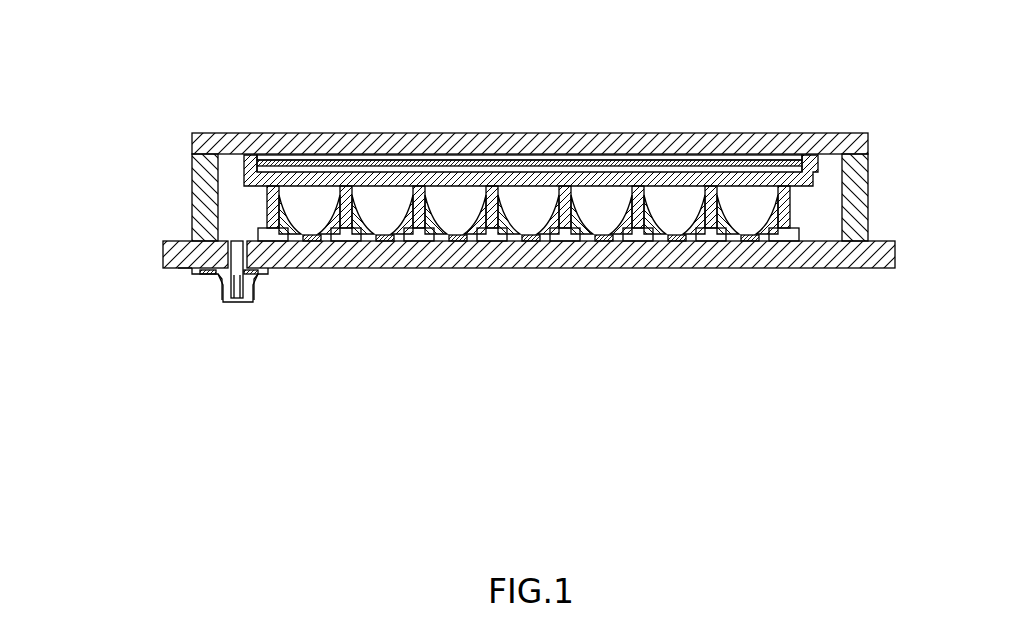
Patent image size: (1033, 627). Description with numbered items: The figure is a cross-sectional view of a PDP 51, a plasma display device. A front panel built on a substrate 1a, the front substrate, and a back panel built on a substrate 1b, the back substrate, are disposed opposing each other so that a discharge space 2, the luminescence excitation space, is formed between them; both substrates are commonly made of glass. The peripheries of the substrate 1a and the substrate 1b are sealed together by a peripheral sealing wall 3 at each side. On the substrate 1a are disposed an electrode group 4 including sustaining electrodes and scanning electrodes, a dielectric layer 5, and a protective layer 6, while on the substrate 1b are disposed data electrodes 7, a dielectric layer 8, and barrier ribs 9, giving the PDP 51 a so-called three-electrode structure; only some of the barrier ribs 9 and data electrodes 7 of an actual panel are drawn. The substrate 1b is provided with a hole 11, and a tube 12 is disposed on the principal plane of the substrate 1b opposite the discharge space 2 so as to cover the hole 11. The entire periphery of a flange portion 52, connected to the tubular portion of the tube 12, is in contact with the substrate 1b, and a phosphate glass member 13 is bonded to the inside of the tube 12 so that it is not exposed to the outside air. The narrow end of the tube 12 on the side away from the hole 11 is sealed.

The PDP 51 is at (866, 98).
The substrate 1a is at (708, 134).
The substrate 1b is at (332, 250).
The peripheral sealing wall 3 is at (200, 210).
The dielectric layer 5 is at (255, 138).
The electrode group 4 is at (390, 138).
The protective layer 6 is at (484, 140).
The discharge space 2 is at (605, 207).
The data electrodes 7 is at (382, 243).
The dielectric layer 8 is at (479, 240).
The barrier ribs 9 is at (642, 212).
The hole 11 is at (574, 240).
The tube 12 is at (233, 302).
The phosphate glass member 13 is at (259, 276).
The flange portion 52 is at (207, 276).